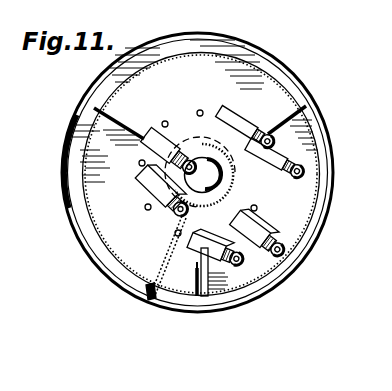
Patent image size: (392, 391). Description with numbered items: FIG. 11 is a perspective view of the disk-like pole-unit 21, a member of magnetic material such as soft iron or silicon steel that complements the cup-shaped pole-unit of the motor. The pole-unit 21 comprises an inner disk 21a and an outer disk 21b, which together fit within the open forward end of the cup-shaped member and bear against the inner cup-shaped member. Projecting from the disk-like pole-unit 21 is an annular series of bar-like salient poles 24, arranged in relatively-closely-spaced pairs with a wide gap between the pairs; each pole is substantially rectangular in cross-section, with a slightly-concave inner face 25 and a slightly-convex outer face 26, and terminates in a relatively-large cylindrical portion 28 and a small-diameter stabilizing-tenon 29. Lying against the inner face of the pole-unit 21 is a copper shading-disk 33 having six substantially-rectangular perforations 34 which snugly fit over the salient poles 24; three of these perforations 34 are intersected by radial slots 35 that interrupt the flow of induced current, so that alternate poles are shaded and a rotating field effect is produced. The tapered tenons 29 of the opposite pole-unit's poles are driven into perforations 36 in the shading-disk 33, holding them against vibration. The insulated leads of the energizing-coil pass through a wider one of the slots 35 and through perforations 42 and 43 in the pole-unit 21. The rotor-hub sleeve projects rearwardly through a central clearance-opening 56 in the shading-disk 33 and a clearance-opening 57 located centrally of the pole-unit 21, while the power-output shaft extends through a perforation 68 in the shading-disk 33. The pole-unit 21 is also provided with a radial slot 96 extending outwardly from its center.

The disk-like pole-unit 21 is at (297, 78).
The inner disk 21a is at (64, 175).
The outer disk 21b is at (68, 124).
The salient poles 24 is at (233, 118).
The concave inner face 25 is at (262, 231).
The convex outer face 26 is at (168, 209).
The cylindrical portion 28 is at (304, 169).
The stabilizing-tenon 29 is at (304, 176).
The shading-disk 33 is at (322, 183).
The perforations 34 is at (131, 183).
The radial slots 35 is at (139, 126).
The perforation 36 is at (163, 121).
The perforation 42 is at (196, 270).
The perforation 43 is at (197, 298).
The central clearance-opening 56 is at (214, 153).
The clearance-opening 57 is at (186, 131).
The perforation 68 is at (139, 163).
The radial slot 96 is at (146, 291).